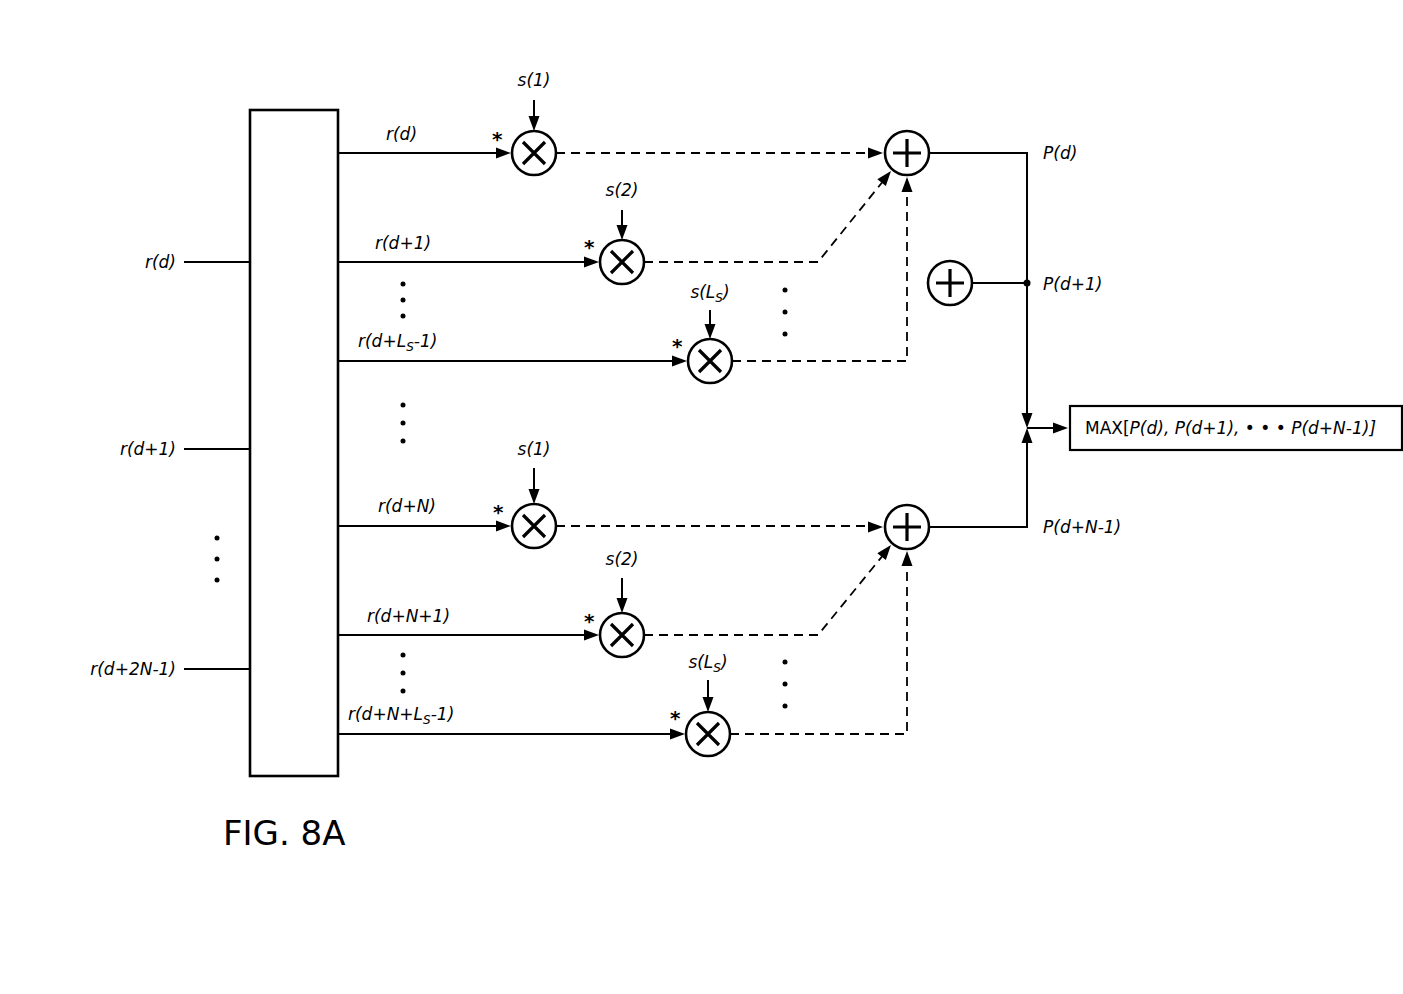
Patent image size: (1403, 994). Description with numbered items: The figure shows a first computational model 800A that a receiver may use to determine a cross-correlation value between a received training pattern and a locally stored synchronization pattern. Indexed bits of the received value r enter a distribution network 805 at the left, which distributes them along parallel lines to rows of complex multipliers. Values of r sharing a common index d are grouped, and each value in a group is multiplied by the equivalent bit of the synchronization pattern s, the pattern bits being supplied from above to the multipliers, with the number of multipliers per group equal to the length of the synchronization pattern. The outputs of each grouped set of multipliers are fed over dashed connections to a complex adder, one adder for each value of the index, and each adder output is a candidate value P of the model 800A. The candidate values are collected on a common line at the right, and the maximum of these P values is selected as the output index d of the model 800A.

The first computational model 800A is at (1238, 103).
The distribution network 805 is at (294, 443).